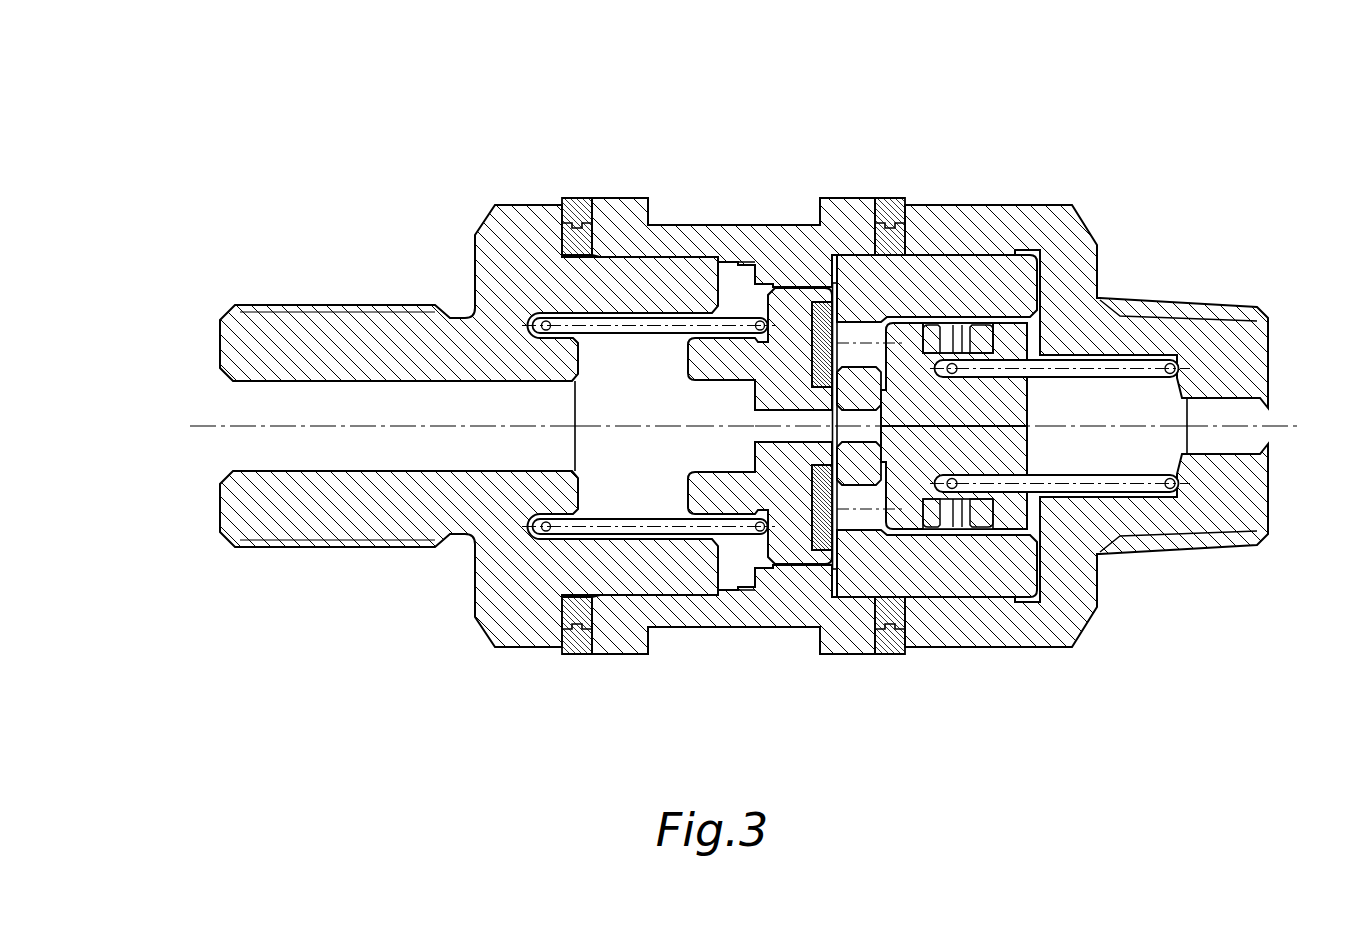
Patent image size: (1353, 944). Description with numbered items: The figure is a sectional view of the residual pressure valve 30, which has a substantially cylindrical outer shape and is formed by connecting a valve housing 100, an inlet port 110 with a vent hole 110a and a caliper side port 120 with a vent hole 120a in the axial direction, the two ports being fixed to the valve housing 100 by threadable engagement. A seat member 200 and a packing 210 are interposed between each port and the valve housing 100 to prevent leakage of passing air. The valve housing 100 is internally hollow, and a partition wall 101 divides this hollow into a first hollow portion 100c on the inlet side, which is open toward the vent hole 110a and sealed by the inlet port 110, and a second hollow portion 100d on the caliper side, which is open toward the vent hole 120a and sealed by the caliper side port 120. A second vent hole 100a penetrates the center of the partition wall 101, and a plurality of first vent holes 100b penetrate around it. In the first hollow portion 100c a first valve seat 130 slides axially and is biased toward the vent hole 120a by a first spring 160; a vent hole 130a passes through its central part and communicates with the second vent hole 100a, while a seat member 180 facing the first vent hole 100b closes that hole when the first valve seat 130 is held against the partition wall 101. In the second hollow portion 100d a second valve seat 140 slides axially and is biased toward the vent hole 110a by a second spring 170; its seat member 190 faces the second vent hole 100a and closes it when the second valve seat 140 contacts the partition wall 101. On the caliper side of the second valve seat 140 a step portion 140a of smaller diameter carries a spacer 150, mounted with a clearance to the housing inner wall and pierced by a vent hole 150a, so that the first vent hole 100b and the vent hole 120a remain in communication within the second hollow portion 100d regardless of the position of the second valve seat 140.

The residual pressure valve 30 is at (1185, 207).
The valve housing 100 is at (705, 628).
The second vent hole 100a is at (800, 282).
The first vent hole 100b is at (765, 275).
The first hollow portion 100c is at (600, 372).
The second hollow portion 100d is at (1065, 398).
The partition wall 101 is at (840, 300).
The inlet port 110 is at (390, 540).
The vent hole 110a is at (232, 440).
The caliper side port 120 is at (1213, 547).
The vent hole 120a is at (1273, 437).
The first valve seat 130 is at (800, 568).
The vent hole 130a is at (753, 423).
The second valve seat 140 is at (925, 560).
The step portion 140a is at (942, 322).
The spacer 150 is at (985, 528).
The vent hole 150a is at (960, 323).
The first spring 160 is at (640, 537).
The second spring 170 is at (1070, 500).
The seat member 180 is at (816, 322).
The seat member 190 is at (873, 443).
The seat member 200 is at (572, 200).
The packing 210 is at (578, 223).